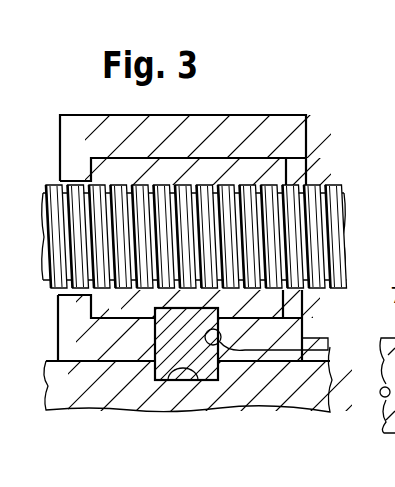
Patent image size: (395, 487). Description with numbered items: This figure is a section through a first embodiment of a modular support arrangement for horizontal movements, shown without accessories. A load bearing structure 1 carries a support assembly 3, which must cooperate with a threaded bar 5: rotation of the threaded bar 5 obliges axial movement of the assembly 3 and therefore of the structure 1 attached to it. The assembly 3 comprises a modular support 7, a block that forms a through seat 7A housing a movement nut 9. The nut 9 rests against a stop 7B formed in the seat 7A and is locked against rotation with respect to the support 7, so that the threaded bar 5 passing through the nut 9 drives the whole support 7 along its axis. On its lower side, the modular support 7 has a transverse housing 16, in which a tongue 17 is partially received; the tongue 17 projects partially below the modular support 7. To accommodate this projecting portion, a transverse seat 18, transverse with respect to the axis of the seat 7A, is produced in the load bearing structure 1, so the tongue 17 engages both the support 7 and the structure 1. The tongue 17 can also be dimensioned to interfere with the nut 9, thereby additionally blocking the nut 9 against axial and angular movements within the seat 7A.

The load bearing structure 1 is at (51, 352).
The support assembly 3 is at (207, 110).
The threaded bar 5 is at (325, 195).
The modular support 7 is at (197, 243).
The through seat 7A is at (290, 310).
The stop 7B is at (95, 178).
The movement nut 9 is at (275, 173).
The transverse housing 16 is at (333, 343).
The tongue 17 is at (199, 385).
The transverse seat 18 is at (164, 381).